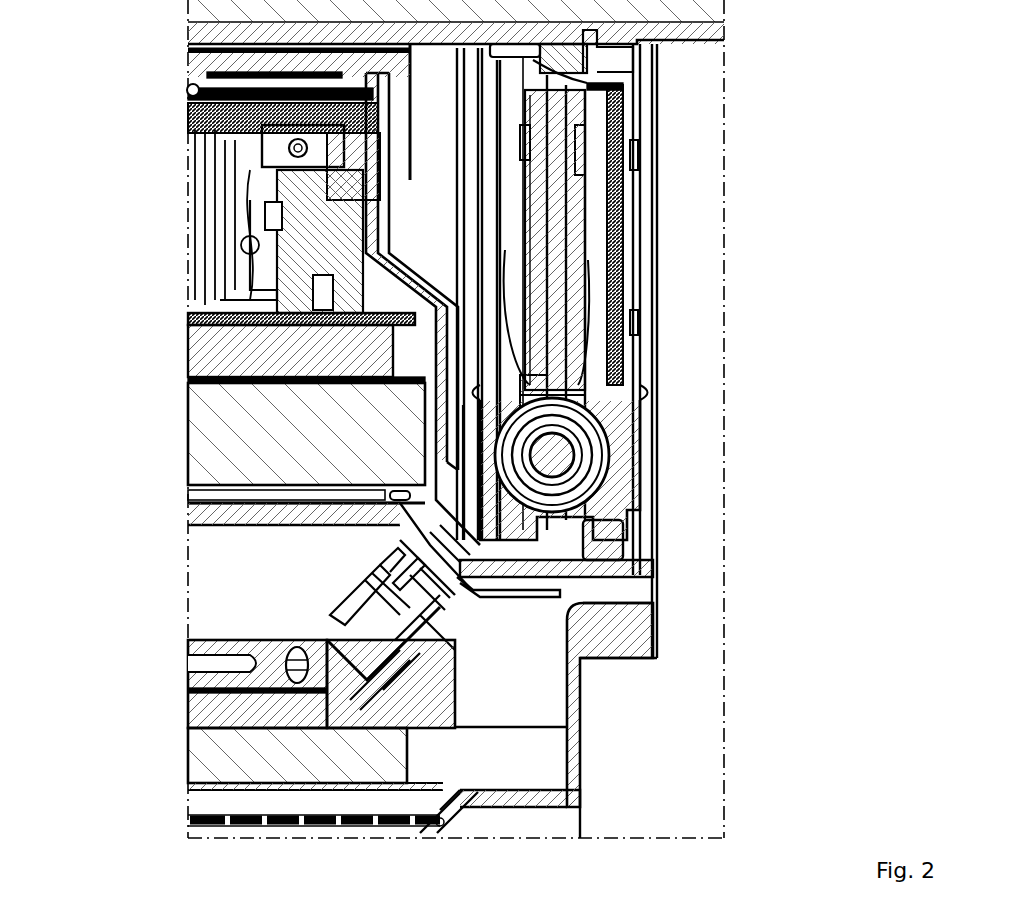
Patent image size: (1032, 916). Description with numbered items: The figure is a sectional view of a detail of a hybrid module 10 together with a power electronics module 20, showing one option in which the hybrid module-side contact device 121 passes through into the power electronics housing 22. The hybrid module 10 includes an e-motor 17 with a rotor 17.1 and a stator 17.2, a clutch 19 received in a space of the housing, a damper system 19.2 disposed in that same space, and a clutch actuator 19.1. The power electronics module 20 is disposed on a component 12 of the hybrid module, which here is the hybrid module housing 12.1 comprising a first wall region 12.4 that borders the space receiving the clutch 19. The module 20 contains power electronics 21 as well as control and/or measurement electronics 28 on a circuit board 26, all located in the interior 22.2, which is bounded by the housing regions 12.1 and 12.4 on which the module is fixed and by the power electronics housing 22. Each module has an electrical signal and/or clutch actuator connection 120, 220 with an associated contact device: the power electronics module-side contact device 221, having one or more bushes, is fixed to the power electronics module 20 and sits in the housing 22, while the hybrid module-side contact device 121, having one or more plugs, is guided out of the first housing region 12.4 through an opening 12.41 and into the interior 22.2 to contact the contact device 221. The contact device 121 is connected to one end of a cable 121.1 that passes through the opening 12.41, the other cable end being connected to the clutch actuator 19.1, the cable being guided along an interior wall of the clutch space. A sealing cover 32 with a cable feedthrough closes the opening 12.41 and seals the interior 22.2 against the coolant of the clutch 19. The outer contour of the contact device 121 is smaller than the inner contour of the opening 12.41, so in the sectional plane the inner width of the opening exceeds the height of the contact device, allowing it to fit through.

The hybrid module 10 is at (640, 669).
The component of the hybrid module 12 is at (246, 502).
The hybrid module housing 12.1 is at (200, 500).
The first wall region of the hybrid module housing 12.4 is at (527, 573).
The opening in the first housing region 12.41 is at (500, 587).
The e-motor 17 is at (62, 357).
The rotor 17.1 is at (205, 347).
The stator 17.2 is at (200, 437).
The clutch 19 is at (705, 313).
The clutch actuator 19.1 is at (440, 135).
The damper system 19.2 is at (645, 447).
The power electronics module 20 is at (625, 760).
The power electronics 21 is at (178, 661).
The power electronics housing 22 is at (573, 788).
The interior of the power electronics module 22.2 is at (232, 563).
The circuit board 26 is at (205, 785).
The control and/or measurement electronics 28 is at (157, 657).
The sealing cover 32 is at (590, 453).
The electrical signal and/or clutch actuator connection 120 is at (520, 625).
The hybrid module-side contact device 121 is at (363, 617).
The cable 121.1 is at (463, 410).
The electrical signal and/or clutch actuator connection 220 is at (530, 679).
The power electronics module-side contact device 221 is at (353, 715).